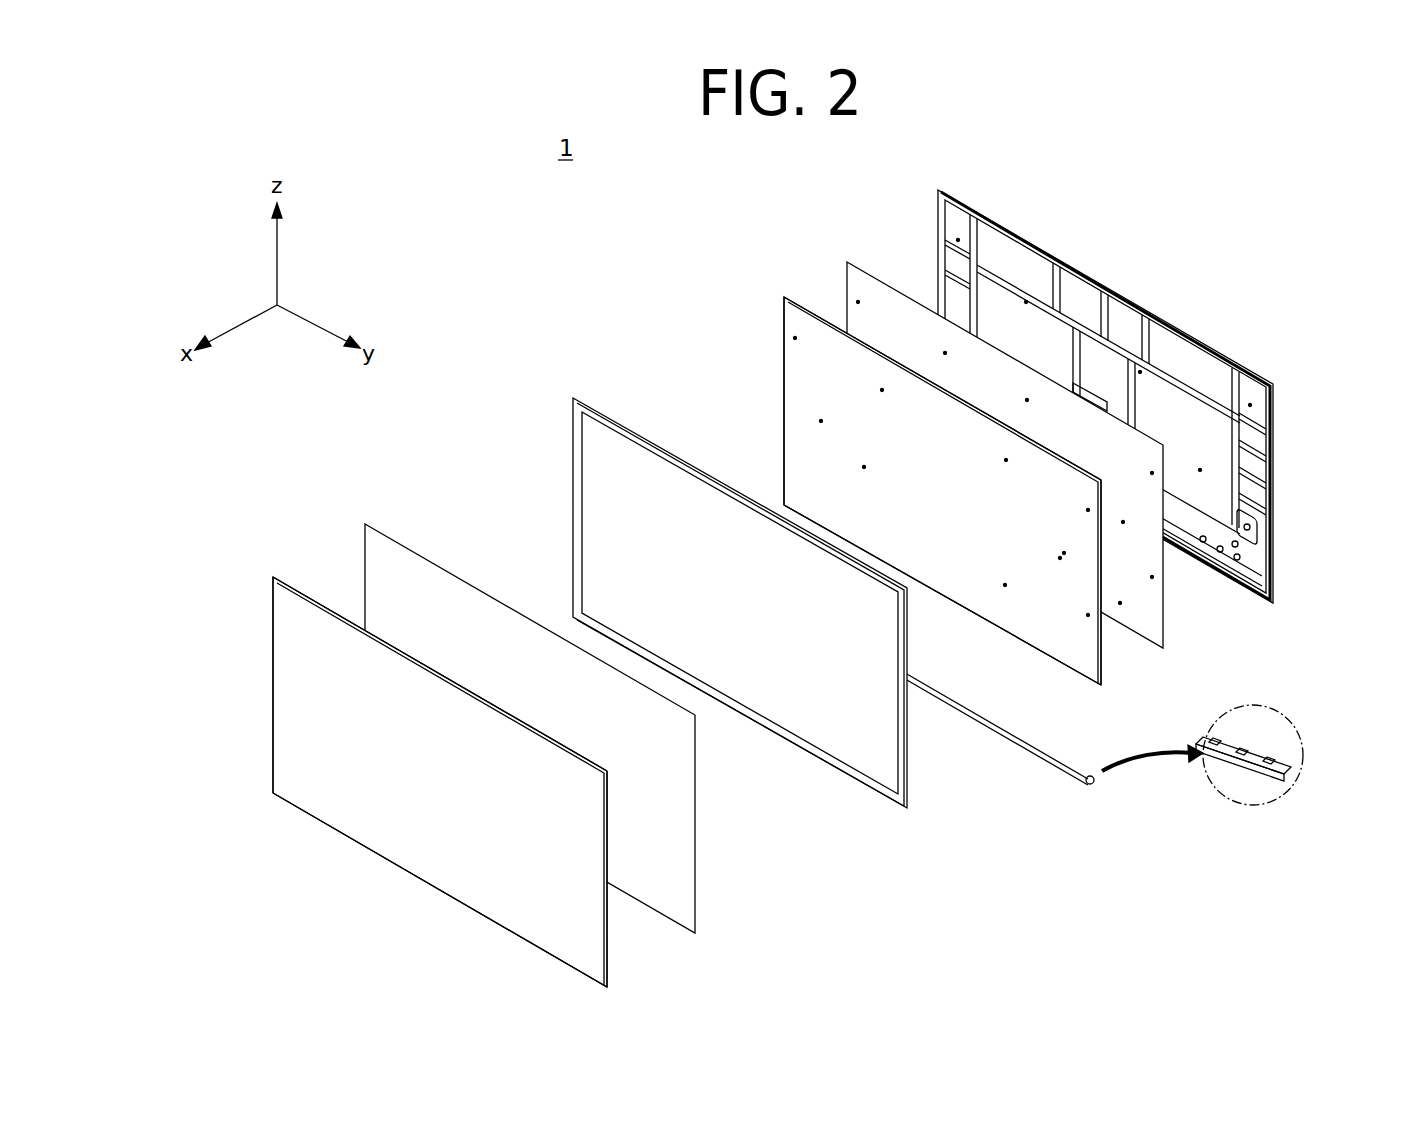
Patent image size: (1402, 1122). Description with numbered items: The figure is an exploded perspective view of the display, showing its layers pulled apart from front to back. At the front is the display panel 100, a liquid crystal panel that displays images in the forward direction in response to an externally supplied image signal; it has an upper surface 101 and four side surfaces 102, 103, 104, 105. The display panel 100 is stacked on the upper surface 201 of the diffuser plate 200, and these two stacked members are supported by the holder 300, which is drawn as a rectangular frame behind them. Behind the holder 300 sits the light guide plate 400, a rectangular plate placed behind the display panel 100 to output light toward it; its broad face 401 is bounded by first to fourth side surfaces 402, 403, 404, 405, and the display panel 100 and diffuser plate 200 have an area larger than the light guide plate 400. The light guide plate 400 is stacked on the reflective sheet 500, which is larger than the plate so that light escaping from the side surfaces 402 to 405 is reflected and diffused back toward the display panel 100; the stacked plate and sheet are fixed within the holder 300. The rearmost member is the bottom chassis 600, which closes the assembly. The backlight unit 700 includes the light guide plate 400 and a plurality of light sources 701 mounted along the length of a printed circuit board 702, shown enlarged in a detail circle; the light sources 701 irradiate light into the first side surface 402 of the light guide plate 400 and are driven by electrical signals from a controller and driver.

The display panel 100 is at (439, 740).
The upper surface 101 is at (337, 796).
The side surface 102 is at (406, 871).
The side surface 103 is at (276, 576).
The side surface 104 is at (273, 693).
The side surface 105 is at (608, 945).
The diffuser plate 200 is at (561, 688).
The upper surface 201 is at (665, 800).
The holder 300 is at (586, 378).
The light guide plate 400 is at (938, 477).
The plate surface 401 is at (865, 403).
The first side surface 402 is at (1045, 657).
The second side surface 403 is at (812, 308).
The third side surface 404 is at (784, 420).
The fourth side surface 405 is at (1103, 668).
The reflective sheet 500 is at (830, 255).
The rear chassis 600 is at (965, 172).
The backlight unit 700 is at (1128, 754).
The light sources 701 is at (1276, 760).
The printed circuit board 702 is at (1290, 766).